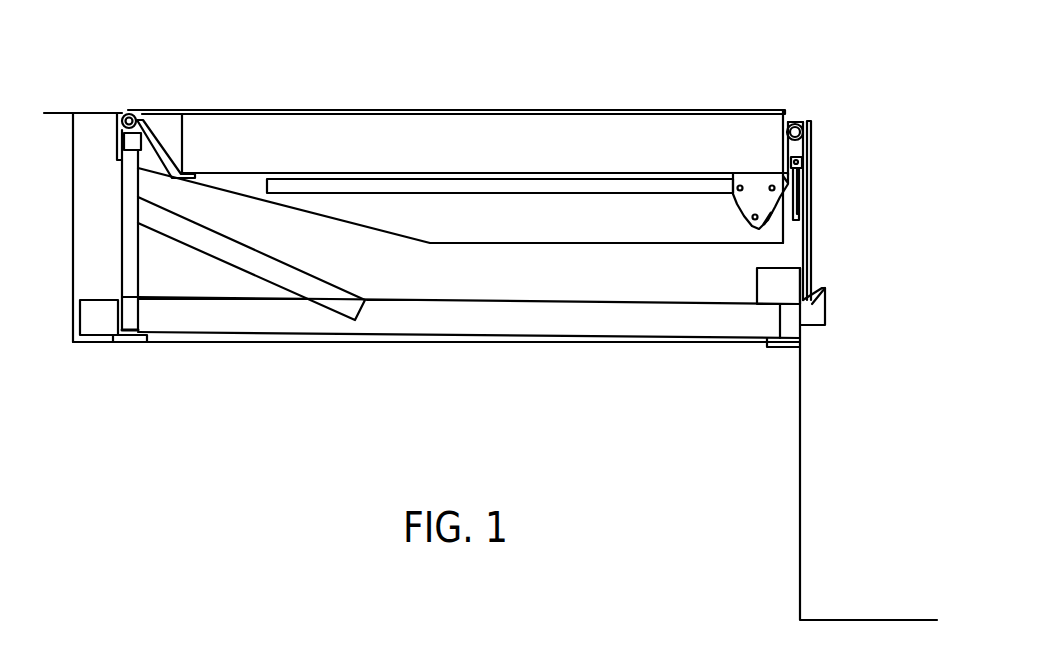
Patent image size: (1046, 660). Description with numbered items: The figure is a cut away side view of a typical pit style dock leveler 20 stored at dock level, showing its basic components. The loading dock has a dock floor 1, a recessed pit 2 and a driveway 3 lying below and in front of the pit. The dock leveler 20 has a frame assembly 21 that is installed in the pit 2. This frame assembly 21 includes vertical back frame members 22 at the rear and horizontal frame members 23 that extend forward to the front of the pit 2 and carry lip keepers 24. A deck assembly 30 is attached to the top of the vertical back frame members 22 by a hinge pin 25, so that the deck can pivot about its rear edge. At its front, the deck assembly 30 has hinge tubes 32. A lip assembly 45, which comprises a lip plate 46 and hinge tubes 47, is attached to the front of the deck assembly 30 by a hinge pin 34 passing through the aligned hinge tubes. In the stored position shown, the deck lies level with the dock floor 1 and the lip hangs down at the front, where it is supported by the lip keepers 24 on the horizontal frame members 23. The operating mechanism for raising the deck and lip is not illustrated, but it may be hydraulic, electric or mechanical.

The dock floor 1 is at (64, 113).
The recessed pit 2 is at (282, 344).
The driveway 3 is at (897, 620).
The dock leveler 20 is at (456, 133).
The deck assembly 30 is at (327, 110).
The frame assembly 21 is at (332, 258).
The horizontal frame members 23 is at (420, 300).
The vertical back frame members 22 is at (140, 260).
The lip keepers 24 is at (814, 305).
The hinge pin 25 is at (127, 113).
The hinge tubes 32 is at (797, 122).
The hinge pin 34 is at (787, 113).
The lip assembly 45 is at (862, 210).
The lip plate 46 is at (812, 218).
The hinge tubes 47 is at (802, 145).